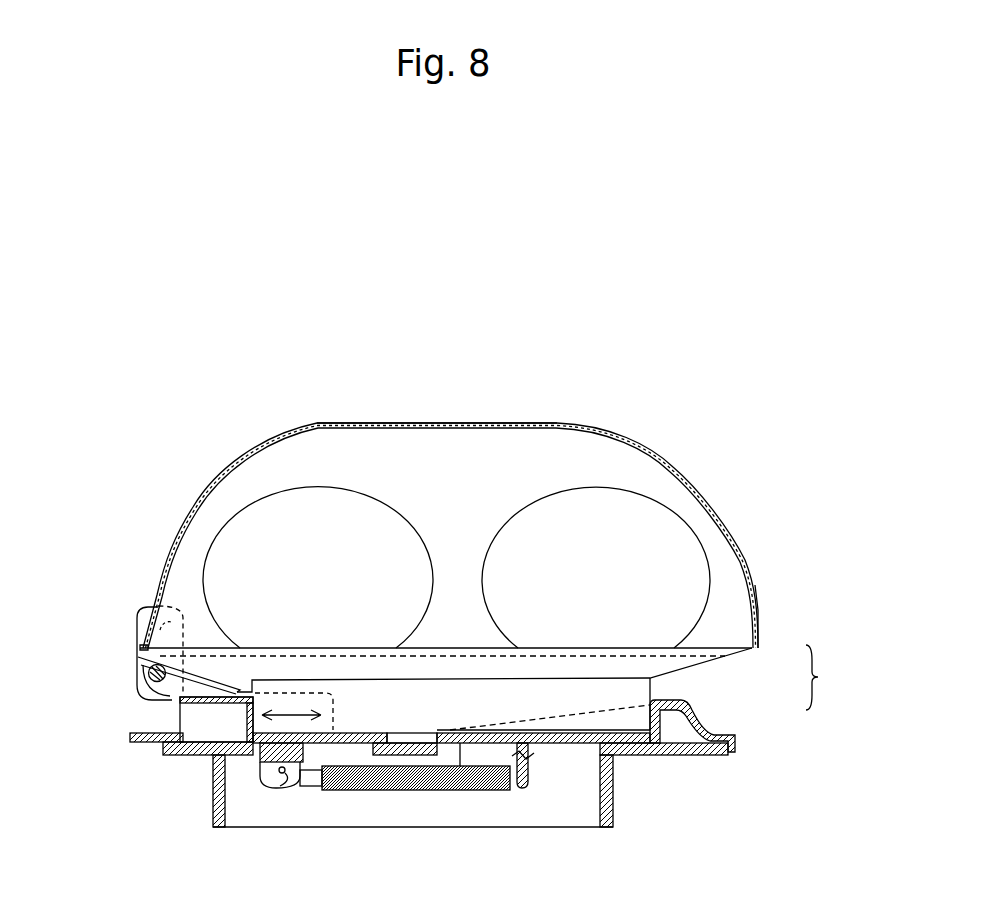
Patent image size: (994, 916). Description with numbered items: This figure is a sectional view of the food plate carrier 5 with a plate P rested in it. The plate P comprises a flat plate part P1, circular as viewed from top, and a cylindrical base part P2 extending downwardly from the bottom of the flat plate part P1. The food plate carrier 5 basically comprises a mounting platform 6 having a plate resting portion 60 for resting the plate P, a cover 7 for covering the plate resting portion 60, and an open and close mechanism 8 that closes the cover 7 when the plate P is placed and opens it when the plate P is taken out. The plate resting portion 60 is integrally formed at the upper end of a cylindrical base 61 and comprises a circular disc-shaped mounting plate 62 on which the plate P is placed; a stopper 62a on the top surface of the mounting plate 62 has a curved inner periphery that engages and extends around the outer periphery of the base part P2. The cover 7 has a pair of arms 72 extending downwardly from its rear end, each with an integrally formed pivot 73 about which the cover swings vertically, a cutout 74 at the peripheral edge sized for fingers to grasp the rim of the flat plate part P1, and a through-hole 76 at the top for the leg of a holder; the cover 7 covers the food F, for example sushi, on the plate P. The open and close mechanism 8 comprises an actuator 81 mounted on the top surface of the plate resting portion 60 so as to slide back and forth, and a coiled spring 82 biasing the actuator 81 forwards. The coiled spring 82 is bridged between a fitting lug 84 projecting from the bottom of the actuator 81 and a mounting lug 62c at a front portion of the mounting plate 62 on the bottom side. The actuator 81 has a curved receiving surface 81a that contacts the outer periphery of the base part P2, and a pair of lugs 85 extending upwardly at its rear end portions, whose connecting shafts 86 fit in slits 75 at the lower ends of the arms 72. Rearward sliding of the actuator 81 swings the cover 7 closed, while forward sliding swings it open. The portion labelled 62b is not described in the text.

The food plate carrier 5 is at (200, 437).
The mounting platform 6 is at (122, 738).
The cover 7 is at (622, 438).
The open and close mechanism 8 is at (350, 727).
The plate resting portion 60 is at (562, 737).
The cylindrical base 61 is at (613, 798).
The mounting plate 62 is at (590, 740).
The stopper 62a is at (650, 738).
The inclined portion 62b is at (352, 732).
The mounting lug 62c is at (530, 772).
The arm 72 is at (137, 614).
The pivot 73 is at (160, 606).
The cutout 74 is at (758, 612).
The slit 75 is at (180, 706).
The through-hole 76 is at (450, 423).
The actuator 81 is at (346, 731).
The receiving surface 81a is at (282, 693).
The coiled spring 82 is at (395, 792).
The fitting lug 84 is at (262, 785).
The lug 85 is at (215, 680).
The connecting shaft 86 is at (148, 670).
The food F is at (330, 492).
The flat plate part P1 is at (703, 653).
The base part P2 is at (703, 692).
The plate P is at (821, 677).